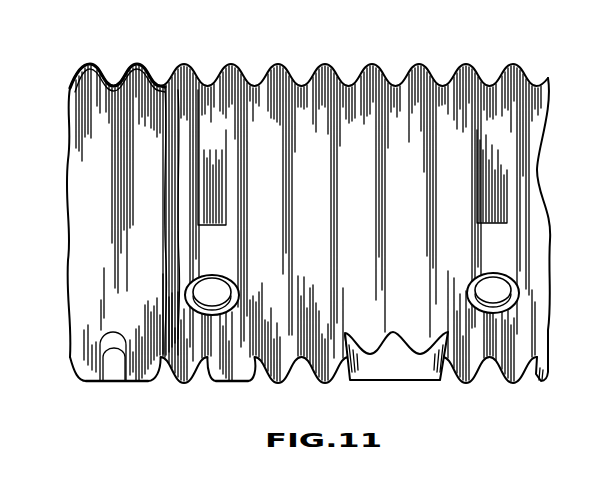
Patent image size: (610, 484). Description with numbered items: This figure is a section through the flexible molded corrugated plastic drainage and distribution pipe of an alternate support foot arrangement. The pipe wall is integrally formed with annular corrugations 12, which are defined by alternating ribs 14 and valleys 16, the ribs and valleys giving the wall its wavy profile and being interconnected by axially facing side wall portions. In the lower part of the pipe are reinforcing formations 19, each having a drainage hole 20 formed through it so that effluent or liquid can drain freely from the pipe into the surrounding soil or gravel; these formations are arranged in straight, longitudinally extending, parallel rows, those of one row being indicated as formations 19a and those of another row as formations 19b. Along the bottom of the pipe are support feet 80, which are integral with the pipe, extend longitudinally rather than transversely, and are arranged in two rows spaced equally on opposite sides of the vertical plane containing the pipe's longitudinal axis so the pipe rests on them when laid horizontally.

The annular corrugations 12 is at (268, 62).
The ribs 14 is at (97, 65).
The valleys 16 is at (208, 89).
The reinforcing formations 19 is at (187, 291).
The reinforcing formations of first row 19a is at (229, 284).
The reinforcing formations of second row 19b is at (142, 383).
The drainage hole 20 is at (211, 286).
The support feet 80 is at (255, 383).